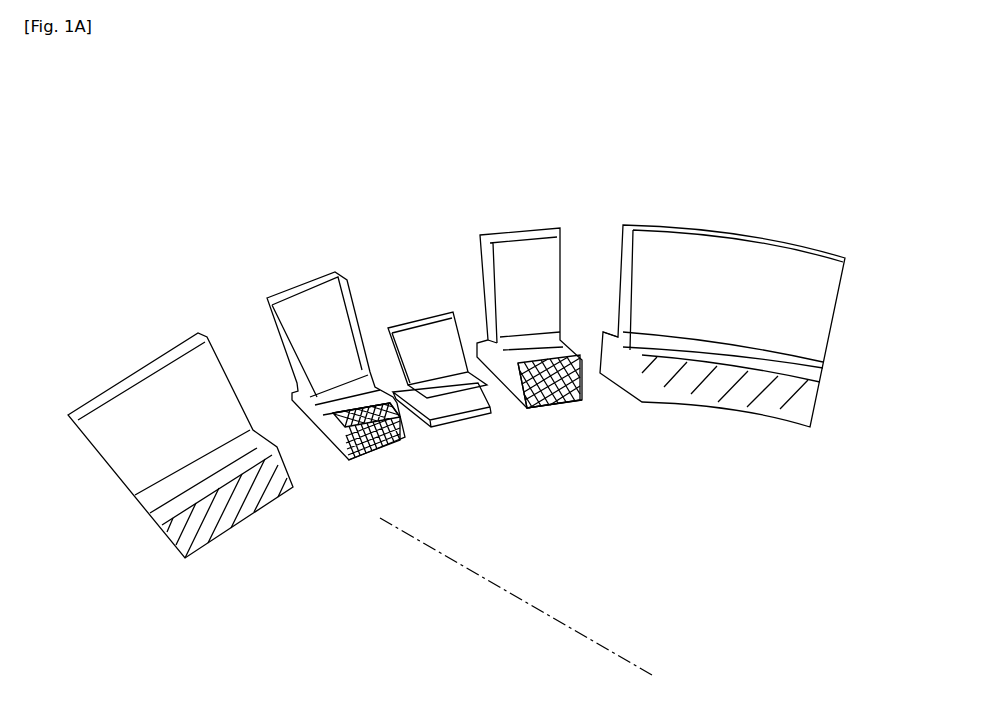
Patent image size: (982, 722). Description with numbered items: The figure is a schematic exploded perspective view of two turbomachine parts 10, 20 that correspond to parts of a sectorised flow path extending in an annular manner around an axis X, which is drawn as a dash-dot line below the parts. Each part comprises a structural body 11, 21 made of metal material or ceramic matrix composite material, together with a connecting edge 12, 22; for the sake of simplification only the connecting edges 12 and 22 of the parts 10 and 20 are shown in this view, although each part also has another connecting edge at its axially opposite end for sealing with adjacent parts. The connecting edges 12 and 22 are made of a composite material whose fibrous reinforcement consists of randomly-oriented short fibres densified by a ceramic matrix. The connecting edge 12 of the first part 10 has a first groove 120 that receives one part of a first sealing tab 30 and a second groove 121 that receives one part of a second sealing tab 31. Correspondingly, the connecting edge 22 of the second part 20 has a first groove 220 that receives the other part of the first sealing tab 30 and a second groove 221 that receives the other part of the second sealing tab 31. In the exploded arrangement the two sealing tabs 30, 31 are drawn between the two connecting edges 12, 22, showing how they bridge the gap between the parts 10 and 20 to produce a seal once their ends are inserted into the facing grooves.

The turbomachine part 10 is at (146, 291).
The structural body 11 is at (187, 372).
The connecting edge 12 is at (300, 303).
The first groove 120 is at (383, 435).
The second groove 121 is at (397, 415).
The turbomachine part 20 is at (640, 170).
The structural body 21 is at (650, 242).
The connecting edge 22 is at (537, 247).
The first groove 220 is at (527, 410).
The second groove 221 is at (548, 408).
The first sealing tab 30 is at (466, 420).
The second sealing tab 31 is at (420, 337).
The axis X is at (597, 645).